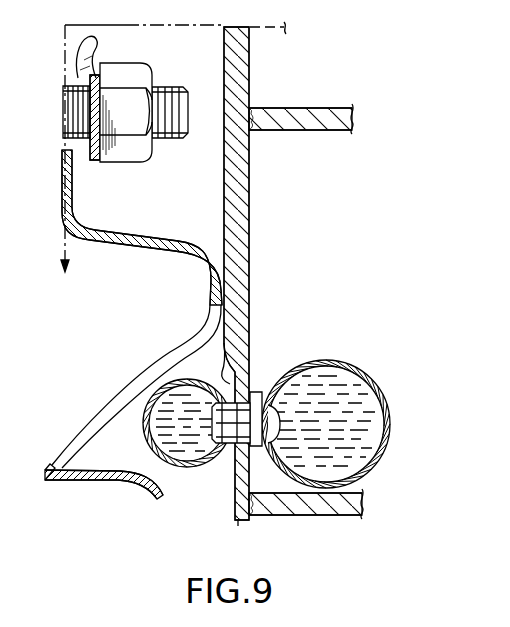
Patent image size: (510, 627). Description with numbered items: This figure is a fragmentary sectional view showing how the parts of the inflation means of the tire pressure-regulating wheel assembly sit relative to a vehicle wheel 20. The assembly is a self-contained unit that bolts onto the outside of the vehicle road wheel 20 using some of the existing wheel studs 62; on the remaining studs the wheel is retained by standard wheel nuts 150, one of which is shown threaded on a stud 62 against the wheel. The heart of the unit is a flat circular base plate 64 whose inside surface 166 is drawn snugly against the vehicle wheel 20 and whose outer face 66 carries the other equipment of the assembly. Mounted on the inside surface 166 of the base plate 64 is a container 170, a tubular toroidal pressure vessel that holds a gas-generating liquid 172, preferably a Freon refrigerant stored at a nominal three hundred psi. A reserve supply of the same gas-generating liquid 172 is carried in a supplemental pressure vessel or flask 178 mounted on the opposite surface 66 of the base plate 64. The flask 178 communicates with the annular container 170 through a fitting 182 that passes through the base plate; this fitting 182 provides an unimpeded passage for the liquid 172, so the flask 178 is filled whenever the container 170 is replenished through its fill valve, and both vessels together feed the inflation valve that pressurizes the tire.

The vehicle wheel 20 is at (116, 490).
The wheel stud 62 is at (175, 140).
The base plate 64 is at (240, 522).
The outer face of the base plate 66 is at (250, 188).
The wheel nut 150 is at (104, 162).
The inside surface of the base plate 166 is at (224, 68).
The container 170 is at (166, 468).
The gas-generating liquid 172 is at (165, 440).
The flask 178 is at (370, 376).
The fitting 182 is at (232, 380).